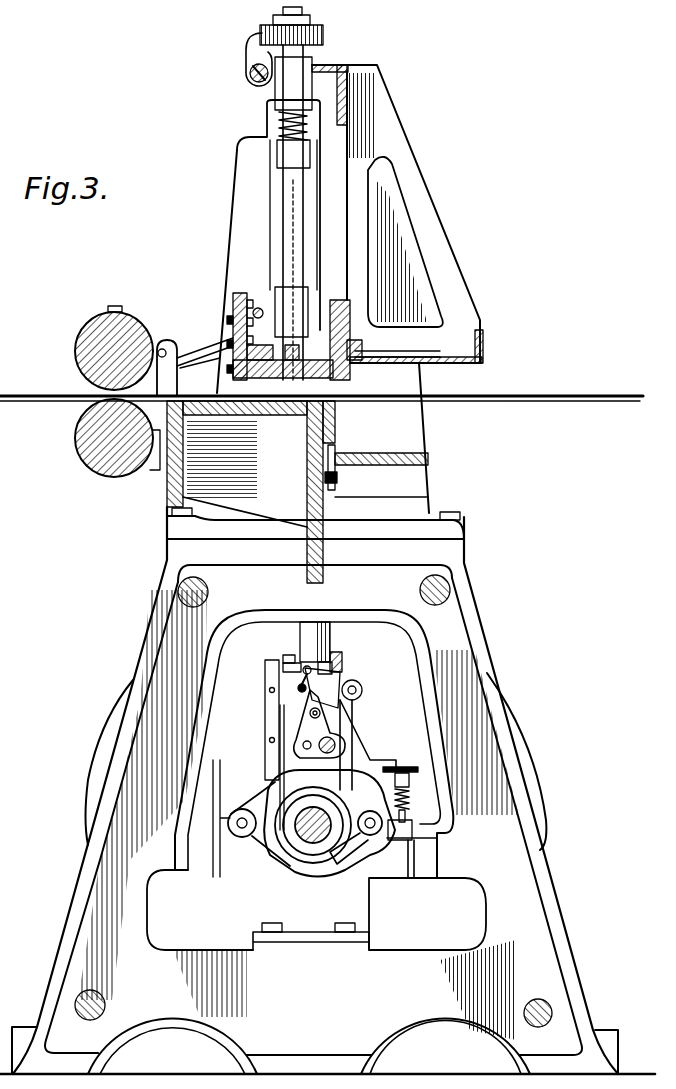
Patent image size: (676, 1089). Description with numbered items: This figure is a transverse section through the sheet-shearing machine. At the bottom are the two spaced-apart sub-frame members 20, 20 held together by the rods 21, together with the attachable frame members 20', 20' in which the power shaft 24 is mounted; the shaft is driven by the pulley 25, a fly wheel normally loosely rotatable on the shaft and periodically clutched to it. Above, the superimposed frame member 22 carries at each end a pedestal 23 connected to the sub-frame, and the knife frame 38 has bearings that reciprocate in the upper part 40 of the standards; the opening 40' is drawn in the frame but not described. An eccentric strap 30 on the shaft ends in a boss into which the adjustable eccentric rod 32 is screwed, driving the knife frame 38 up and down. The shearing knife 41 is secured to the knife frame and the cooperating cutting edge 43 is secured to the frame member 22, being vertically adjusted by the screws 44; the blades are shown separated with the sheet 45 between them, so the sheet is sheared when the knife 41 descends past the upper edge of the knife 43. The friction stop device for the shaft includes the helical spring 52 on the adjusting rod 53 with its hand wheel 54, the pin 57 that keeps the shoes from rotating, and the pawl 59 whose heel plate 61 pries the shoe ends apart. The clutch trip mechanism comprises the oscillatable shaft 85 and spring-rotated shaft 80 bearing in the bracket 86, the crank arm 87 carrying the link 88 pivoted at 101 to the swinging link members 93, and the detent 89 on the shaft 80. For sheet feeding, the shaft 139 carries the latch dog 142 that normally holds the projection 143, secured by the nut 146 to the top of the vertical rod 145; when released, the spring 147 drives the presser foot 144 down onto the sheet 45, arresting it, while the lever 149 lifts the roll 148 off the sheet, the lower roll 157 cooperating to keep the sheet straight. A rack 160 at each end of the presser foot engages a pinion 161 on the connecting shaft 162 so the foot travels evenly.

The sub-frame member 20 is at (327, 790).
The attachable frame member 20' is at (316, 827).
The rod 21 is at (208, 592).
The superimposed frame member 22 is at (315, 470).
The pedestal 23 is at (232, 241).
The power shaft 24 is at (312, 838).
The pulley 25 is at (100, 756).
The eccentric strap 30 is at (367, 745).
The eccentric rod 32 is at (320, 635).
The knife frame 38 is at (440, 250).
The upper part of standard 40 is at (253, 215).
The bracket opening 40' is at (427, 242).
The shearing knife 41 is at (348, 368).
The cutting edge 43 is at (336, 432).
The screw 44 is at (340, 480).
The sheet 45 is at (522, 395).
The helical spring 52 is at (412, 800).
The adjusting rod 53 is at (343, 662).
The hand wheel 54 is at (404, 768).
The pin 57 is at (243, 808).
The pawl 59 is at (352, 852).
The heel plate 61 is at (412, 838).
The spring rotated shaft 80 is at (363, 688).
The oscillatable shaft 85 is at (335, 752).
The bracket 86 is at (265, 690).
The crank arm 87 is at (304, 748).
The link 88 is at (311, 714).
The detent 89 is at (342, 680).
The swinging link member 93 is at (310, 683).
The pivot 101 is at (282, 656).
The shaft 139 is at (255, 85).
The latch dog 142 is at (250, 53).
The projection 143 is at (325, 37).
The presser foot 144 is at (318, 402).
The vertical rod 145 is at (302, 180).
The nut 146 is at (304, 20).
The spring 147 is at (279, 124).
The roll 148 is at (100, 316).
The lever 149 is at (200, 345).
The roll 157 is at (100, 470).
The rack 160 is at (233, 292).
The pinion 161 is at (257, 307).
The shaft 162 is at (230, 350).